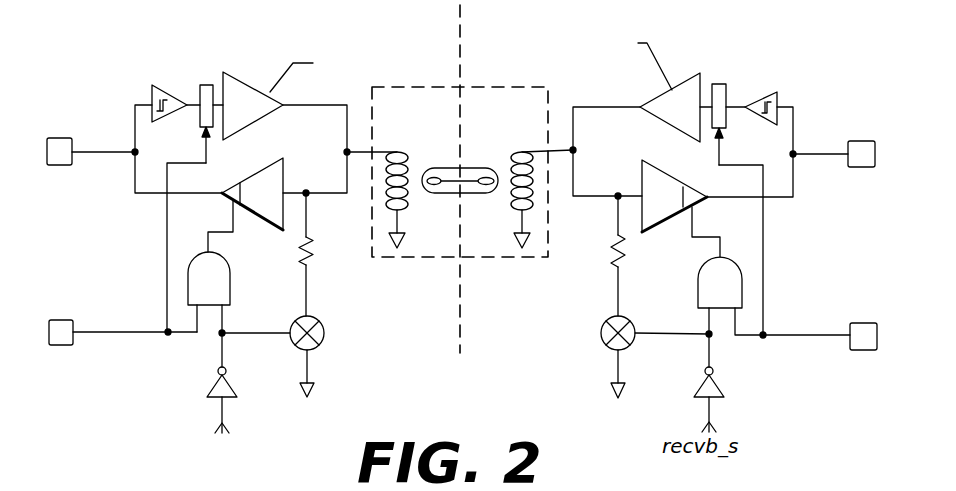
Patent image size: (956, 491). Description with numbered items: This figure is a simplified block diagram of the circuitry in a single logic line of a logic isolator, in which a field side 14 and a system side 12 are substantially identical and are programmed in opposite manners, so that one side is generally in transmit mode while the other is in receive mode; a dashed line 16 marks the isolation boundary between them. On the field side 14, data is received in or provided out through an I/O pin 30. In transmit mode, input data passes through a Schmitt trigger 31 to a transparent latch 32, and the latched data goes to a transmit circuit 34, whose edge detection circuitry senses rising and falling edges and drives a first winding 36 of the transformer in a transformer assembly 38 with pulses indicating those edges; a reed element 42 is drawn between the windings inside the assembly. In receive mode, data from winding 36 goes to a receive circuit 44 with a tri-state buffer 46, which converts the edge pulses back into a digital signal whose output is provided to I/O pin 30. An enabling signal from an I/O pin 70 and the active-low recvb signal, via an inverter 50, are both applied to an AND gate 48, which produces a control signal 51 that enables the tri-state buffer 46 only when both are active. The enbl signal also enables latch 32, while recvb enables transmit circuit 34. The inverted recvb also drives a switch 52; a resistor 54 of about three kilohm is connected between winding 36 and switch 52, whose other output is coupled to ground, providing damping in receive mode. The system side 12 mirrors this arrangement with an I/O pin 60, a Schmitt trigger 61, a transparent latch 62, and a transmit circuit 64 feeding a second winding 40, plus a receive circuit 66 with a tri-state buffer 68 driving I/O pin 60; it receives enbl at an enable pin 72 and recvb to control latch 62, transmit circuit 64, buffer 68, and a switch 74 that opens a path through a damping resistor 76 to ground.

The system side 12 is at (782, 43).
The field side 14 is at (90, 96).
The isolation barrier 16 is at (460, 28).
The I/O pin 30 is at (61, 138).
The Schmitt trigger 31 is at (173, 93).
The transparent latch 32 is at (205, 83).
The transmit circuit 34 is at (266, 78).
The first winding 36 is at (398, 150).
The transformer assembly 38 is at (480, 87).
The second winding 40 is at (527, 150).
The reed switch 42 is at (437, 168).
The receive circuit 44 is at (268, 167).
The tri-state buffer 46 is at (228, 190).
The AND gate 48 is at (232, 285).
The inverter 50 is at (208, 385).
The control signal 51 is at (228, 215).
The switch 52 is at (322, 324).
The resistor 54 is at (313, 250).
The I/O pin 60 is at (862, 141).
The Schmitt trigger 61 is at (777, 96).
The transparent latch 62 is at (720, 84).
The transmit circuit 64 is at (688, 75).
The receive circuit 66 is at (675, 170).
The tri-state buffer 68 is at (699, 195).
The I/O pin 70 is at (63, 345).
The enable pin 72 is at (856, 323).
The switch 74 is at (630, 323).
The damping resistor 76 is at (626, 252).